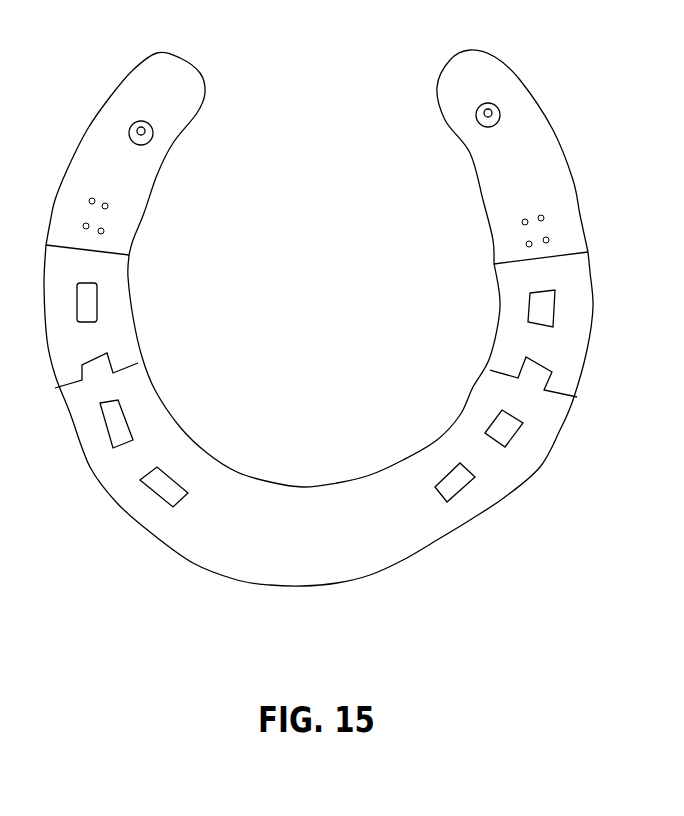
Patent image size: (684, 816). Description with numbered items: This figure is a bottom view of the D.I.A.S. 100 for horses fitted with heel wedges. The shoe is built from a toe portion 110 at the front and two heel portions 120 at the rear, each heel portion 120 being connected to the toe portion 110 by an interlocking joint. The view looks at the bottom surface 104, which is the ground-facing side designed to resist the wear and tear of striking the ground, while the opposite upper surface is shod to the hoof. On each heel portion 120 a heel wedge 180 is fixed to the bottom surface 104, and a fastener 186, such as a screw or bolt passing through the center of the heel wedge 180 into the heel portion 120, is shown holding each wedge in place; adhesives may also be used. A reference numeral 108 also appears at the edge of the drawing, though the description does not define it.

The D.I.A.S. 100 is at (500, 571).
The bottom surface 104 is at (575, 318).
The left branch tread pattern 108 is at (94, 395).
The toe portion 110 is at (333, 415).
The heel portion 120 is at (517, 287).
The heel wedge 180 is at (517, 163).
The fastener 186 is at (490, 130).